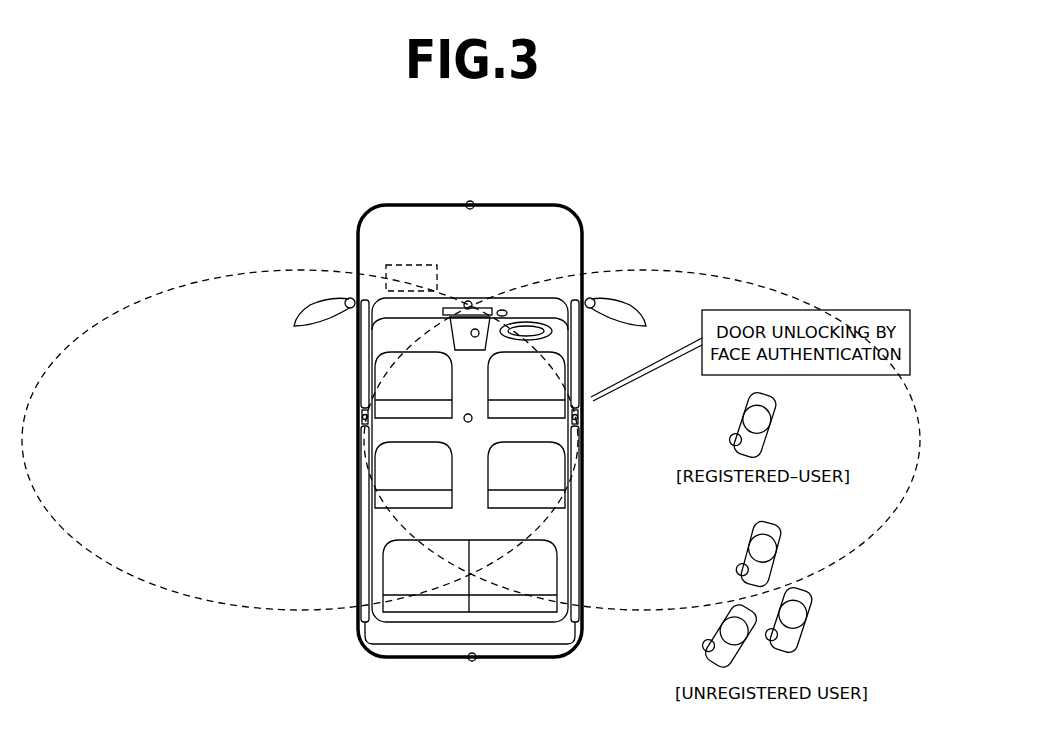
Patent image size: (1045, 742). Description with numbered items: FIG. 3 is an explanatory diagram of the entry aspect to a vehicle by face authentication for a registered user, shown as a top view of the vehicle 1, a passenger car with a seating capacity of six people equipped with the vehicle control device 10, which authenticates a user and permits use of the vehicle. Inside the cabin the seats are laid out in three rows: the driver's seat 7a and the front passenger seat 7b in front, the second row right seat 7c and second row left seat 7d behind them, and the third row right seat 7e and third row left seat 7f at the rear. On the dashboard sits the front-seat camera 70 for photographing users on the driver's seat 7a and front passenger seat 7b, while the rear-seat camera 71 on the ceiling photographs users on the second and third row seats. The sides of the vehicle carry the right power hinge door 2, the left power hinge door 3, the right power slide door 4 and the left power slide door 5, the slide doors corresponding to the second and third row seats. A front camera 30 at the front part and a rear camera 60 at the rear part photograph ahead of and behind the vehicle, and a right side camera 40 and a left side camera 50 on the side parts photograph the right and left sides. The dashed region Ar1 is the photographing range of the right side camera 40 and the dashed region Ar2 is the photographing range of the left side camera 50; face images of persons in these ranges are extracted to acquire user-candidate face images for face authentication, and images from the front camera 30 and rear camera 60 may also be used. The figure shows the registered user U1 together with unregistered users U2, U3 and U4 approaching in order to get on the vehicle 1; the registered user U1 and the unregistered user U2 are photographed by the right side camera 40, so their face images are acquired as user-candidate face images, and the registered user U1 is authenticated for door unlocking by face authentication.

The vehicle 1 is at (522, 207).
The right power hinge door 2 is at (583, 350).
The left power hinge door 3 is at (358, 352).
The right power slide door 4 is at (583, 487).
The left power slide door 5 is at (357, 478).
The vehicle control device 10 is at (413, 262).
The front camera 30 is at (471, 201).
The right side camera 40 is at (583, 420).
The left side camera 50 is at (360, 422).
The rear camera 60 is at (472, 662).
The front-seat camera 70 is at (470, 302).
The rear-seat camera 71 is at (469, 423).
The driver's seat 7a is at (487, 374).
The front passenger seat 7b is at (395, 353).
The second row right seat 7c is at (487, 488).
The second row left seat 7d is at (402, 508).
The third row right seat 7e is at (506, 541).
The third row left seat 7f is at (389, 543).
The photographing range of the right side camera Ar1 is at (768, 288).
The photographing range of the left side camera Ar2 is at (138, 300).
The registered user U1 is at (768, 421).
The unregistered user U2 is at (772, 553).
The unregistered user U3 is at (800, 624).
The unregistered user U4 is at (722, 646).